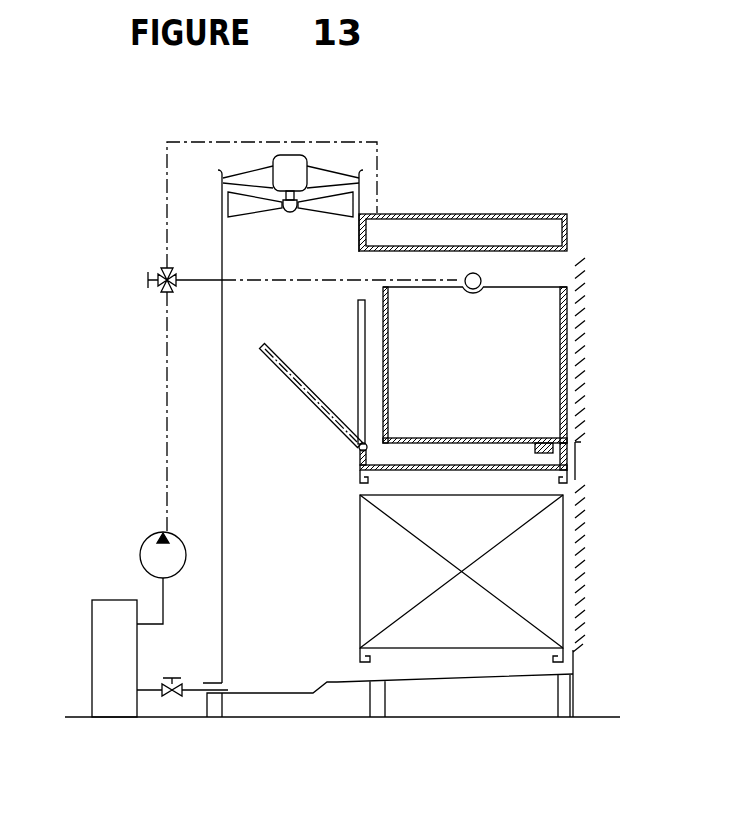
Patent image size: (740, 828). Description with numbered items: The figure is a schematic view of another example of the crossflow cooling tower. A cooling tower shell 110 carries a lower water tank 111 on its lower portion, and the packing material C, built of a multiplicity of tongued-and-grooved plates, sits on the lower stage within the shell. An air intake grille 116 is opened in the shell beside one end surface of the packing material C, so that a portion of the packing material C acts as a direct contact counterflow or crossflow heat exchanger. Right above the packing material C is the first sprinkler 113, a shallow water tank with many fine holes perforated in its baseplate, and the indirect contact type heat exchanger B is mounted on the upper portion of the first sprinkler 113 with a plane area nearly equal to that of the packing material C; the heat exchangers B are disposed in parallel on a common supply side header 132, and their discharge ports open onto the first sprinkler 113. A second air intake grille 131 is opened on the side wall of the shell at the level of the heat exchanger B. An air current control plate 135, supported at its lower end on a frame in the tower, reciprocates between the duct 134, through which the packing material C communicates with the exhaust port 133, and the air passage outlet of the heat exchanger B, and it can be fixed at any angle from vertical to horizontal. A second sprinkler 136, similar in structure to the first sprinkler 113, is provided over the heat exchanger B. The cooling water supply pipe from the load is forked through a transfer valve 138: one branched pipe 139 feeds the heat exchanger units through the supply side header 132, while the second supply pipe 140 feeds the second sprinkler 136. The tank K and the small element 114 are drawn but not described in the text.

The cooling tower shell 110 is at (219, 435).
The lower water tank 111 is at (280, 690).
The first sprinkler 113 is at (567, 462).
The heater element 114 is at (510, 467).
The air intake grille 116 is at (583, 605).
The second air intake grille 131 is at (583, 297).
The supply side header 132 is at (468, 273).
The exhaust port 133 is at (323, 162).
The duct 134 is at (305, 556).
The air current control plate 135 is at (358, 357).
The second sprinkler 136 is at (568, 222).
The transfer valve 138 is at (156, 272).
The branched pipe 139 is at (192, 283).
The second supply pipe 140 is at (165, 183).
The indirect contact type heat exchanger B is at (543, 365).
The packing material C is at (538, 568).
The tank K is at (92, 663).